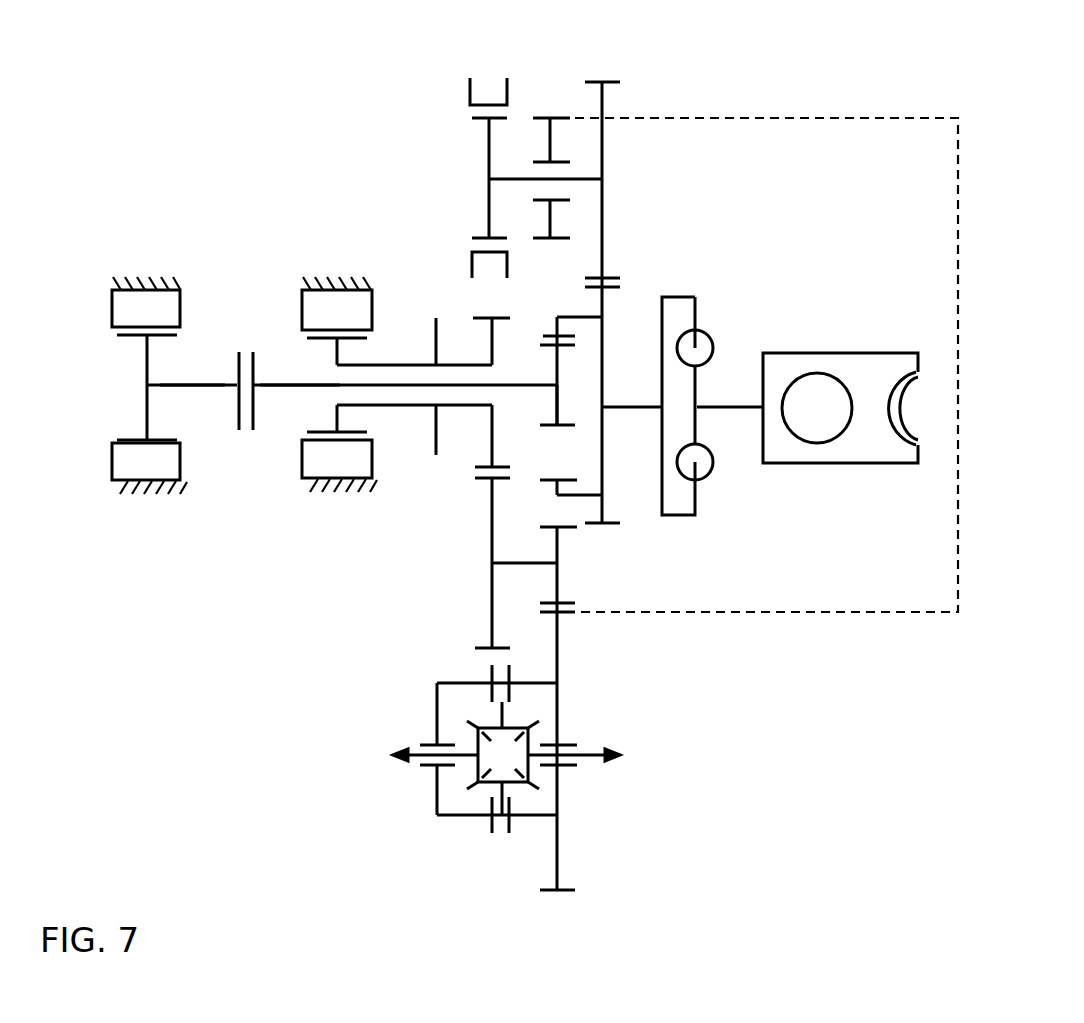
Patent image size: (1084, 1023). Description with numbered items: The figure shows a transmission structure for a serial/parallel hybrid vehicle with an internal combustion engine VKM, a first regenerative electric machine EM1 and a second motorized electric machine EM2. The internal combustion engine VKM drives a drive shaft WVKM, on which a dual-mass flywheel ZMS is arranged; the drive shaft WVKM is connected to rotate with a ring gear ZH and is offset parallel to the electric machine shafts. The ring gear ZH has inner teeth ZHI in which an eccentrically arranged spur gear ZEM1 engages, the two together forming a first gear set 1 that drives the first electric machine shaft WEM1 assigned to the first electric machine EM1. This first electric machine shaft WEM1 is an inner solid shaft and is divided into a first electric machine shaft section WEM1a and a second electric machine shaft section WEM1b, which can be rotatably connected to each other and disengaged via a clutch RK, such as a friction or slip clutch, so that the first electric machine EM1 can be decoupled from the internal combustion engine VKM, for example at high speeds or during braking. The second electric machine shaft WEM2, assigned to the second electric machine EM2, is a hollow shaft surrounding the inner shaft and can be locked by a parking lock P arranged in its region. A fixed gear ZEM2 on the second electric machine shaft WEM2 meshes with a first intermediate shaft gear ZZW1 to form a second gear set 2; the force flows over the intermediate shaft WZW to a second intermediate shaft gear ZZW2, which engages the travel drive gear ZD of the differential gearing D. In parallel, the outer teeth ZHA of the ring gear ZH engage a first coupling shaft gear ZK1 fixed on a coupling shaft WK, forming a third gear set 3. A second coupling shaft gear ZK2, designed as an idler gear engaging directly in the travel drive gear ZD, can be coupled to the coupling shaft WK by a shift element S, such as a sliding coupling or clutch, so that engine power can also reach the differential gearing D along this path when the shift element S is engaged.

The shift element S is at (468, 92).
The second coupling shaft gear ZK2 is at (543, 118).
The first coupling shaft gear ZK1 is at (610, 82).
The coupling shaft WK is at (585, 179).
The outer teeth of the ring gear ZHA is at (686, 268).
The third gear set 3 is at (670, 243).
The spur gear ZEM1 is at (548, 345).
The inner teeth of the ring gear ZHI is at (563, 335).
The first gear set 1 is at (598, 340).
The ring gear ZH is at (602, 377).
The first electric machine shaft WEM1 is at (273, 376).
The second electric machine shaft section WEM1b is at (205, 385).
The first electric machine shaft section WEM1a is at (299, 385).
The clutch RK is at (247, 367).
The first electric machine EM1 is at (175, 321).
The second electric machine EM2 is at (366, 322).
The second electric machine shaft WEM2 is at (412, 365).
The parking lock P is at (435, 369).
The gear ZEM2 is at (492, 422).
The second gear set 2 is at (475, 425).
The first intermediate shaft gear ZZW1 is at (492, 520).
The intermediate shaft WZW is at (525, 563).
The second intermediate shaft gear ZZW2 is at (566, 603).
The travel drive gear ZD is at (557, 665).
The differential gearing D is at (512, 753).
The drive shaft WVKM is at (638, 407).
The dual-mass flywheel ZMS is at (683, 513).
The internal combustion engine VKM is at (846, 421).